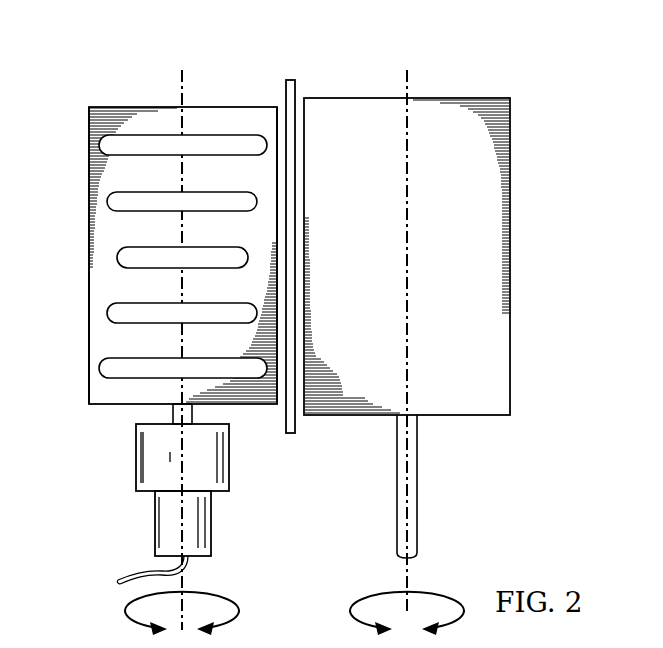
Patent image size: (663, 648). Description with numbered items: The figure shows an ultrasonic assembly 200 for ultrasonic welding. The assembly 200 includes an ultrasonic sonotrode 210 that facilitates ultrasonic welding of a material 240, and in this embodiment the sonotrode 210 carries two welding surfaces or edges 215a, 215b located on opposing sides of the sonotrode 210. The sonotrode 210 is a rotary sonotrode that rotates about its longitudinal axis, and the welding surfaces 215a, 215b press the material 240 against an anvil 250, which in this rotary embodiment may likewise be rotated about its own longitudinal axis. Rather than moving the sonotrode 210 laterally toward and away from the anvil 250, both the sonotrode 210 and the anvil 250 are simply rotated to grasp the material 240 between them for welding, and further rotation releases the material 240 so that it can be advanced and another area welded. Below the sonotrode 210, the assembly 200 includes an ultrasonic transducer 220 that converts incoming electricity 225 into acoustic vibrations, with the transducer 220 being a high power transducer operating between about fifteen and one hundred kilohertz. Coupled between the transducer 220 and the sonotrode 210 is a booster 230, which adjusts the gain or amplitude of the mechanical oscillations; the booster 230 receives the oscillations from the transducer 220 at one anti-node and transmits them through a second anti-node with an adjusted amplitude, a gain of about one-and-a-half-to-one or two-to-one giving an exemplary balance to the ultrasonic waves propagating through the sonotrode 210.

The ultrasonic assembly 200 is at (100, 54).
The ultrasonic sonotrode 210 is at (86, 172).
The welding surface 215a is at (89, 310).
The welding surface 215b is at (277, 167).
The ultrasonic transducer 220 is at (155, 517).
The incoming electricity 225 is at (118, 575).
The booster 230 is at (136, 451).
The material 240 is at (286, 90).
The anvil 250 is at (475, 416).